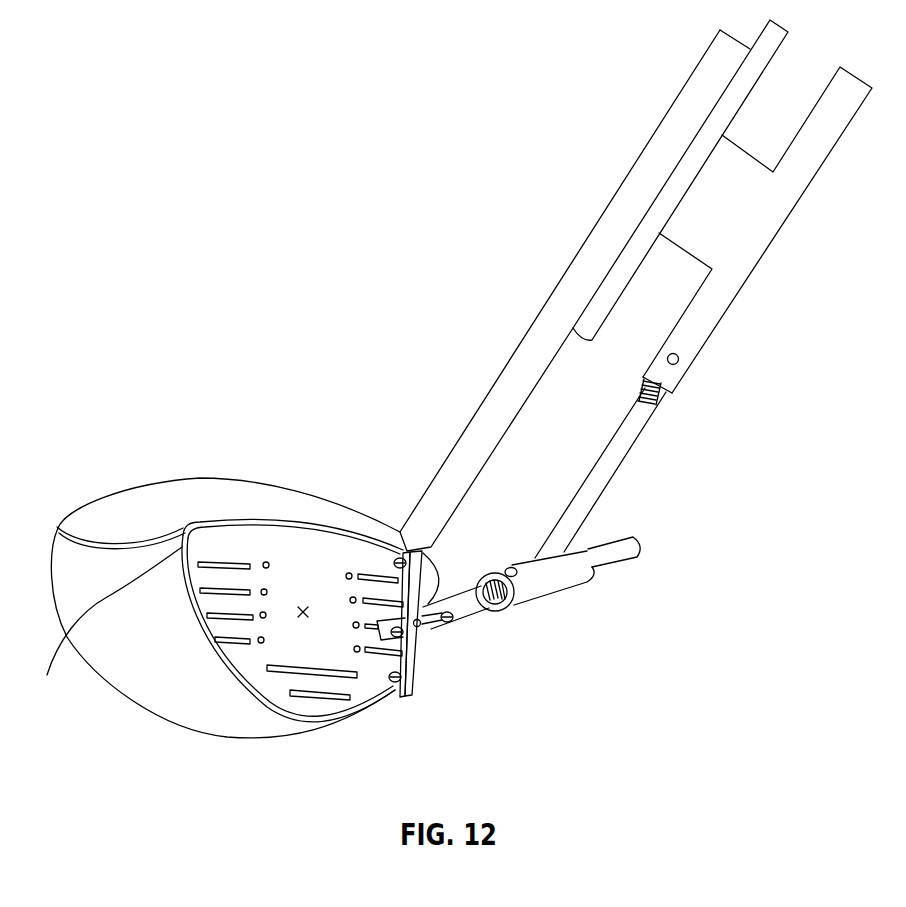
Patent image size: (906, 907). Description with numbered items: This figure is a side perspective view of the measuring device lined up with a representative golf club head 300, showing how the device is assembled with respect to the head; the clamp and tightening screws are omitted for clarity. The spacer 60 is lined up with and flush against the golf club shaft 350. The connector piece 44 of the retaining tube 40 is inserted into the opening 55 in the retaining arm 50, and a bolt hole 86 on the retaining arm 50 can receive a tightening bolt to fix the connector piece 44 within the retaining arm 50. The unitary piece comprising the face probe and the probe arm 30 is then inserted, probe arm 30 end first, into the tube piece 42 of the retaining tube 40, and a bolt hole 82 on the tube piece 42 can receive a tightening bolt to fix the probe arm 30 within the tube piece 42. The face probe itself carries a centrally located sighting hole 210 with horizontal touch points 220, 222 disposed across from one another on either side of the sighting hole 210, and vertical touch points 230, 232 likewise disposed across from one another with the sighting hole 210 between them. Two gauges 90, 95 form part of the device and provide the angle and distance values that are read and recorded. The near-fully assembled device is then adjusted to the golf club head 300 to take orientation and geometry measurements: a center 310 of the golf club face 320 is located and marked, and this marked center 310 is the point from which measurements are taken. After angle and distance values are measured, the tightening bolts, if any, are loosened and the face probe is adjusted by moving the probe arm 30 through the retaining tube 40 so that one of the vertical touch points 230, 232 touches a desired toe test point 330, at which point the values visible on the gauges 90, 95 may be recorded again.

The probe arm 30 is at (482, 605).
The retaining tube 40 is at (577, 593).
The tube piece 42 is at (562, 586).
The connector piece 44 is at (613, 468).
The retaining arm 50 is at (757, 245).
The opening 55 is at (672, 396).
The spacer 60 is at (777, 36).
The bolt hole 82 is at (511, 567).
The bolt hole 86 is at (680, 360).
The gauge 90 is at (489, 574).
The gauge 95 is at (640, 395).
The sighting hole 210 is at (420, 660).
The horizontal touch point 220 is at (448, 622).
The horizontal touch point 222 is at (417, 630).
The vertical touch point 230 is at (420, 552).
The vertical touch point 232 is at (393, 680).
The golf club head 300 is at (212, 470).
The center 310 is at (303, 607).
The golf club face 320 is at (348, 712).
The toe test point 330 is at (105, 627).
The golf club shaft 350 is at (613, 197).